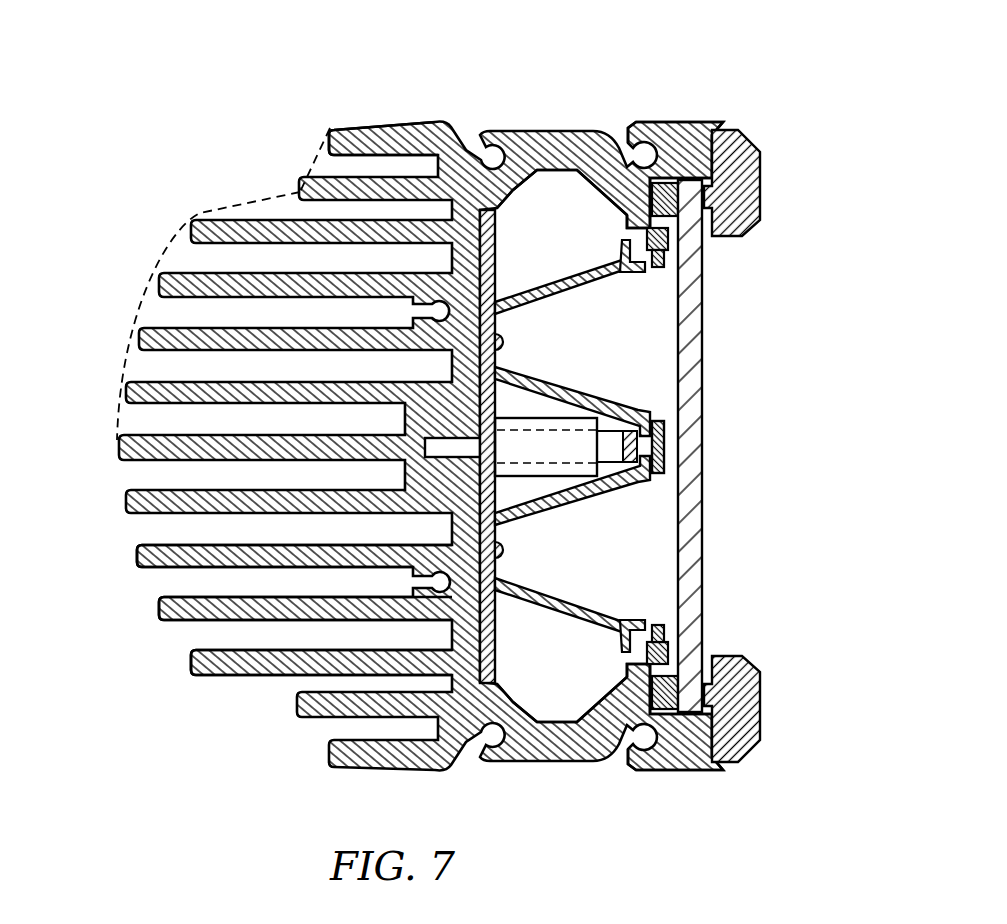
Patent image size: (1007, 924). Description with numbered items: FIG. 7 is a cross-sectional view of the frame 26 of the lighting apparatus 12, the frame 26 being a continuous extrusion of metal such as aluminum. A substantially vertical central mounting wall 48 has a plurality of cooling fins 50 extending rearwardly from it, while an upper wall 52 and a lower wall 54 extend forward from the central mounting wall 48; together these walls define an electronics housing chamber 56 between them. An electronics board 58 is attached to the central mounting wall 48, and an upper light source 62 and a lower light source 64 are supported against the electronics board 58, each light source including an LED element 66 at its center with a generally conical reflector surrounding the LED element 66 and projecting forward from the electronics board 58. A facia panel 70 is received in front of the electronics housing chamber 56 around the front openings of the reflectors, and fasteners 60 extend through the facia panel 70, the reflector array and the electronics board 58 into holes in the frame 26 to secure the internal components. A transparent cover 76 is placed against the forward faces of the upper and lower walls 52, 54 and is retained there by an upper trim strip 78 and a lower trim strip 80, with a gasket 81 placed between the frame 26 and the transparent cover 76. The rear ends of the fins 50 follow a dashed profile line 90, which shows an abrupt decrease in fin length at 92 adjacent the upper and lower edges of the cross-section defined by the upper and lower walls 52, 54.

The lighting apparatus 12 is at (750, 68).
The frame 26 is at (420, 126).
The central mounting wall 48 is at (464, 205).
The cooling fins 50 is at (192, 661).
The upper wall 52 is at (650, 122).
The lower wall 54 is at (655, 775).
The electronics housing chamber 56 is at (544, 212).
The electronics board 58 is at (495, 648).
The fasteners 60 is at (665, 440).
The upper light source 62 is at (615, 283).
The lower light source 64 is at (615, 612).
The LED element 66 is at (507, 342).
The facia panel 70 is at (672, 240).
The transparent cover 76 is at (702, 383).
The upper trim strip 78 is at (740, 143).
The lower trim strip 80 is at (740, 755).
The gasket 81 is at (670, 196).
The dashed profile line 90 is at (148, 300).
The abrupt decrease in fin length 92 is at (297, 197).